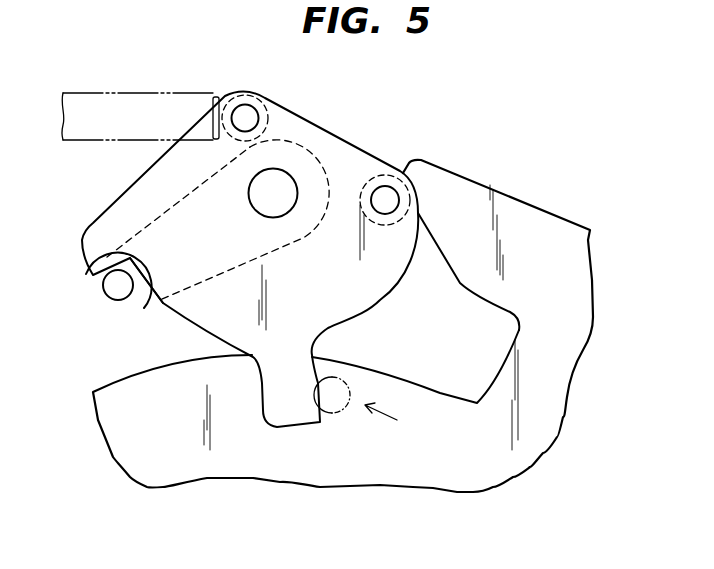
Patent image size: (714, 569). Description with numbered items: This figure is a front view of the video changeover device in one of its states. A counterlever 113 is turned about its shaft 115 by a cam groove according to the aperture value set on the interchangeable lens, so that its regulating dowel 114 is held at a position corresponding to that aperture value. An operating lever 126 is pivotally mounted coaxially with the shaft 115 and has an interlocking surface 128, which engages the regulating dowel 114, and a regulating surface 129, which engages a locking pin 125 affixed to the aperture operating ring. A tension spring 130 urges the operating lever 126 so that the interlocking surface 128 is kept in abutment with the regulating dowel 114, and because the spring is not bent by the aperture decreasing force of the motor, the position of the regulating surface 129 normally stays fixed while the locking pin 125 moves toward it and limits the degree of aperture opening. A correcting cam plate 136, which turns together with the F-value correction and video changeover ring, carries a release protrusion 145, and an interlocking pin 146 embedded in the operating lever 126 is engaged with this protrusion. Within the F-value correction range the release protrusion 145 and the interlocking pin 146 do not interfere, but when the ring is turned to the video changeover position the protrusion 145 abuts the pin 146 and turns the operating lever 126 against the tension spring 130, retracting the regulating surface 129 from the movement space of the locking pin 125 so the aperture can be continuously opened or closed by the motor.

The counterlever 113 is at (143, 305).
The regulating dowel 114 is at (113, 293).
The shaft 115 is at (290, 176).
The locking pin 125 is at (345, 410).
The operating lever 126 is at (333, 305).
The interlocking surface 128 is at (110, 279).
The regulating surface 129 is at (337, 388).
The tension spring 130 is at (165, 93).
The correcting cam plate 136 is at (485, 483).
The release protrusion 145 is at (450, 187).
The interlocking pin 146 is at (384, 193).